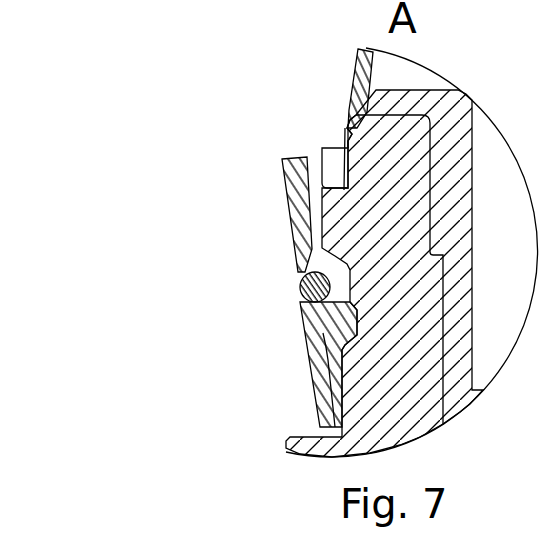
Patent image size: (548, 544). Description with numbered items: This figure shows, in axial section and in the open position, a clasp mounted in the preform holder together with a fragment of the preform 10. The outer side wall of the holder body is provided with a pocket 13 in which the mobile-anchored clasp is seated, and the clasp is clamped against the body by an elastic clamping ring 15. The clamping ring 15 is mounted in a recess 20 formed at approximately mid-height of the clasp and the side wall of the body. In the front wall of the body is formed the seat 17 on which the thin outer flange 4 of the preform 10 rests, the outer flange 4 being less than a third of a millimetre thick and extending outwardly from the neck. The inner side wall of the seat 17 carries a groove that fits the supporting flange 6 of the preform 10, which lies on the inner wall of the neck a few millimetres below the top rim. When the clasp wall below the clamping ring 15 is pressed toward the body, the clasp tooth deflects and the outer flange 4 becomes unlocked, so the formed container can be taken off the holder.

The outer flange 4 is at (333, 160).
The supporting flange 6 is at (352, 137).
The preform 10 is at (363, 72).
The pocket 13 is at (356, 290).
The elastic clamping ring 15 is at (305, 283).
The seat 17 is at (350, 148).
The recess 20 is at (300, 303).